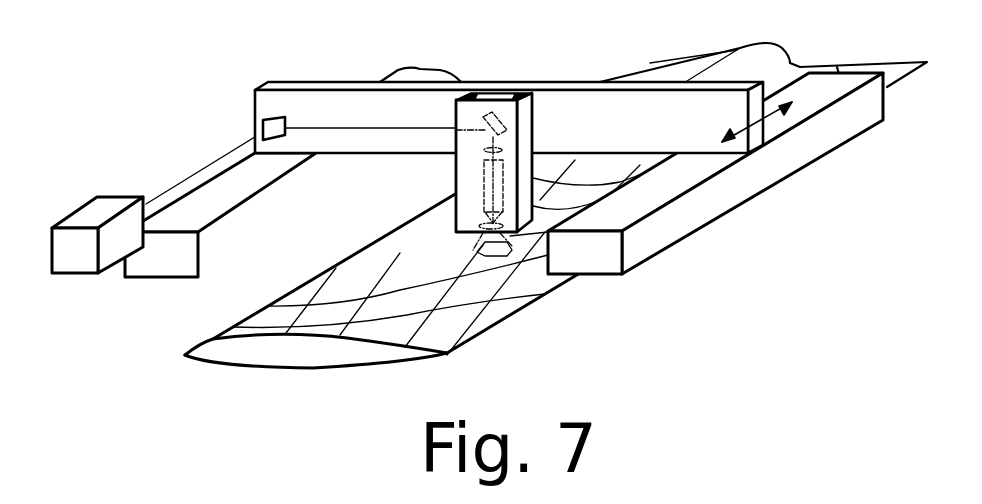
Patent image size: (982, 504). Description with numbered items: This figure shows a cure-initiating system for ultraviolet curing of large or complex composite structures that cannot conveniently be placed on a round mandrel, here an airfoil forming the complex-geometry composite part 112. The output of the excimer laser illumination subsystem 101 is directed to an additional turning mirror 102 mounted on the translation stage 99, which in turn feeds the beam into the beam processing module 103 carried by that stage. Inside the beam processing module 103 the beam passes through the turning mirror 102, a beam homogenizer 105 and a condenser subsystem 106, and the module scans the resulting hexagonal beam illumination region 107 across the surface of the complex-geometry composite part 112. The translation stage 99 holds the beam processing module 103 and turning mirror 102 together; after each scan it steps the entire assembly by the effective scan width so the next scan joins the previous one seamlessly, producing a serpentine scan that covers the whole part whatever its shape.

The translation stage 99 is at (760, 140).
The illumination subsystem 101 is at (130, 195).
The turning mirror 102 is at (258, 130).
The beam processing module 103 is at (524, 106).
The beam homogenizer 105 is at (503, 180).
The condenser subsystem 106 is at (567, 276).
The hexagonal beam illumination region 107 is at (478, 244).
The complex-geometry composite part 112 is at (517, 313).